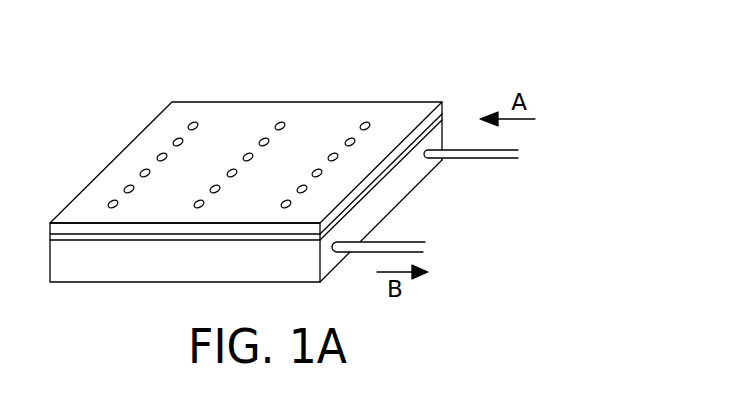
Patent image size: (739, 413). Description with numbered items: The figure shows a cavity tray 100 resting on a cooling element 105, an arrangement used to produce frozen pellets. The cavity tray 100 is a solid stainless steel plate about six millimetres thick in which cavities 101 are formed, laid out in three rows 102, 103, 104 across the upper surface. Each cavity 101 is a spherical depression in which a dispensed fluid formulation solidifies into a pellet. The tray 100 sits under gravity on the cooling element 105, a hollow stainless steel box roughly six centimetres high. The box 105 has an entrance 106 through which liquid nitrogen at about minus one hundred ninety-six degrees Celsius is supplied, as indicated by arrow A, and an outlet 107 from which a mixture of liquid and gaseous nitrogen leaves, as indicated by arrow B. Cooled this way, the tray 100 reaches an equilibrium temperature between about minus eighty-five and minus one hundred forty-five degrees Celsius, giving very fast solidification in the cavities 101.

The cavity tray 100 is at (272, 102).
The cavity 101 is at (175, 141).
The first row of cavities 102 is at (102, 185).
The second row of cavities 103 is at (201, 183).
The third row of cavities 104 is at (290, 183).
The cooling element 105 is at (408, 173).
The entrance 106 is at (518, 157).
The outlet 107 is at (422, 248).